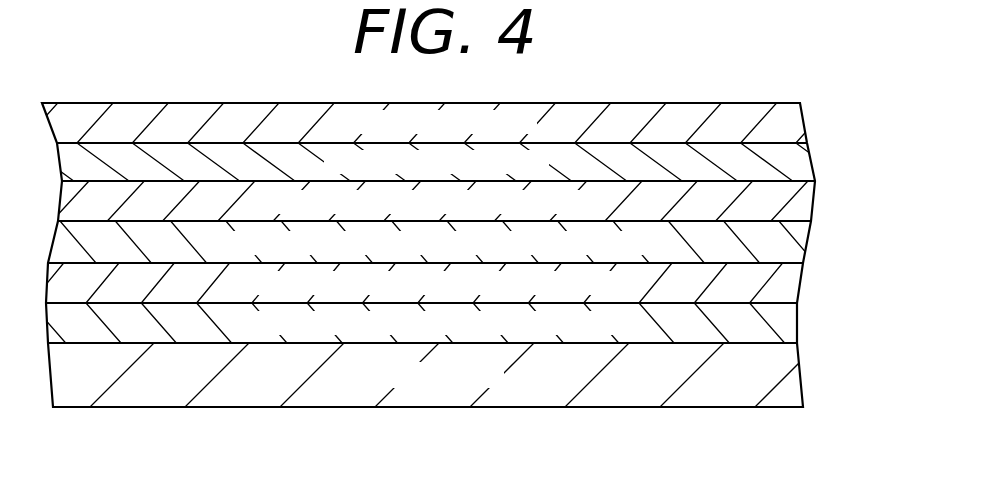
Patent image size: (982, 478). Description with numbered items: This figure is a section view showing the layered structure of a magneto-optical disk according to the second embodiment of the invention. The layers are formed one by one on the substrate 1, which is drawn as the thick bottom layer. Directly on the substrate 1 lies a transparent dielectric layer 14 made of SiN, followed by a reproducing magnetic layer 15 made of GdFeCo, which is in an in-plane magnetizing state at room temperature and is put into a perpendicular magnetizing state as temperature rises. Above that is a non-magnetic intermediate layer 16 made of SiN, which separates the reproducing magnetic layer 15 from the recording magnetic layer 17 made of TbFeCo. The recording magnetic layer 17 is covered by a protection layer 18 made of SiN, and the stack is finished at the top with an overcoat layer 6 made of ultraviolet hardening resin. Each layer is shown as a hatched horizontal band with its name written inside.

The overcoat layer 6 is at (795, 122).
The protection layer 18 is at (797, 157).
The recording magnetic layer 17 is at (793, 196).
The non-magnetic intermediate layer 16 is at (780, 243).
The reproducing magnetic layer 15 is at (778, 283).
The transparent dielectric layer 14 is at (780, 320).
The substrate 1 is at (780, 370).